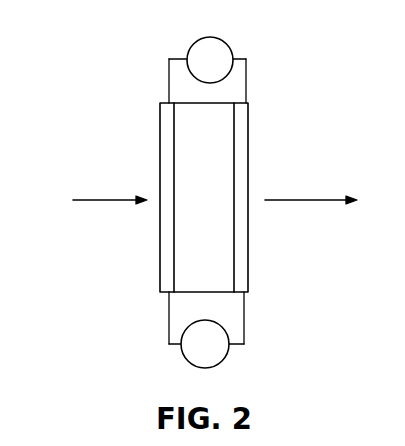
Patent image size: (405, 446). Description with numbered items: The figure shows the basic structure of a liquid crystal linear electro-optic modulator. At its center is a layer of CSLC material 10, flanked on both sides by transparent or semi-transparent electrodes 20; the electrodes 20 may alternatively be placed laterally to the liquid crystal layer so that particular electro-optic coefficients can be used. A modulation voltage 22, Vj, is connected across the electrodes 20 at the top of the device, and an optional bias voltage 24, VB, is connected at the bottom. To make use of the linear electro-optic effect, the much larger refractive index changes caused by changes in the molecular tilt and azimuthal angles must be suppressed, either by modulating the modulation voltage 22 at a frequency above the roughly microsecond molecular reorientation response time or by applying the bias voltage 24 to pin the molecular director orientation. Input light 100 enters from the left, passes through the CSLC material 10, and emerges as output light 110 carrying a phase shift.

The CSLC material 10 is at (220, 207).
The electrodes 20 is at (160, 262).
The modulation voltage 22 is at (229, 46).
The bias voltage 24 is at (221, 363).
The input light 100 is at (95, 200).
The output light 110 is at (298, 200).